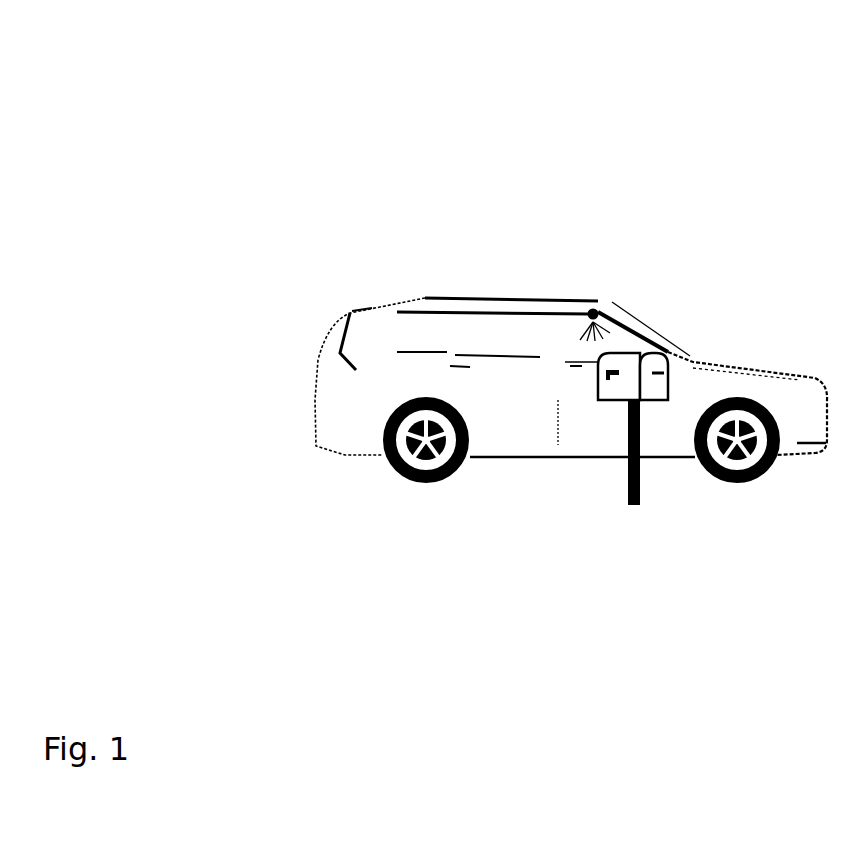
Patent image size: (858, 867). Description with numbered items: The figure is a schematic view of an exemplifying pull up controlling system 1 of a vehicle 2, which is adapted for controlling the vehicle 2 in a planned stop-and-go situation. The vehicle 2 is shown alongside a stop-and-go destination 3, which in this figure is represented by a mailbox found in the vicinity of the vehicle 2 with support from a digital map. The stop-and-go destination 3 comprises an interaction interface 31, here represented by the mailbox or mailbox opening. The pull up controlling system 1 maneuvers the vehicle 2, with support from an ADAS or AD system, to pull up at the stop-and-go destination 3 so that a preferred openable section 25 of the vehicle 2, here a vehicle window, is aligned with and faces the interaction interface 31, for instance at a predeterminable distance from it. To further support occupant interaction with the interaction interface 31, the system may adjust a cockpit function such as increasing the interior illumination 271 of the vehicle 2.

The pull up controlling system 1 is at (270, 125).
The vehicle 2 is at (275, 270).
The stop-and-go destination 3 is at (653, 530).
The openable section 25 is at (567, 337).
The interior illumination 271 is at (603, 305).
The interaction interface 31 is at (673, 380).